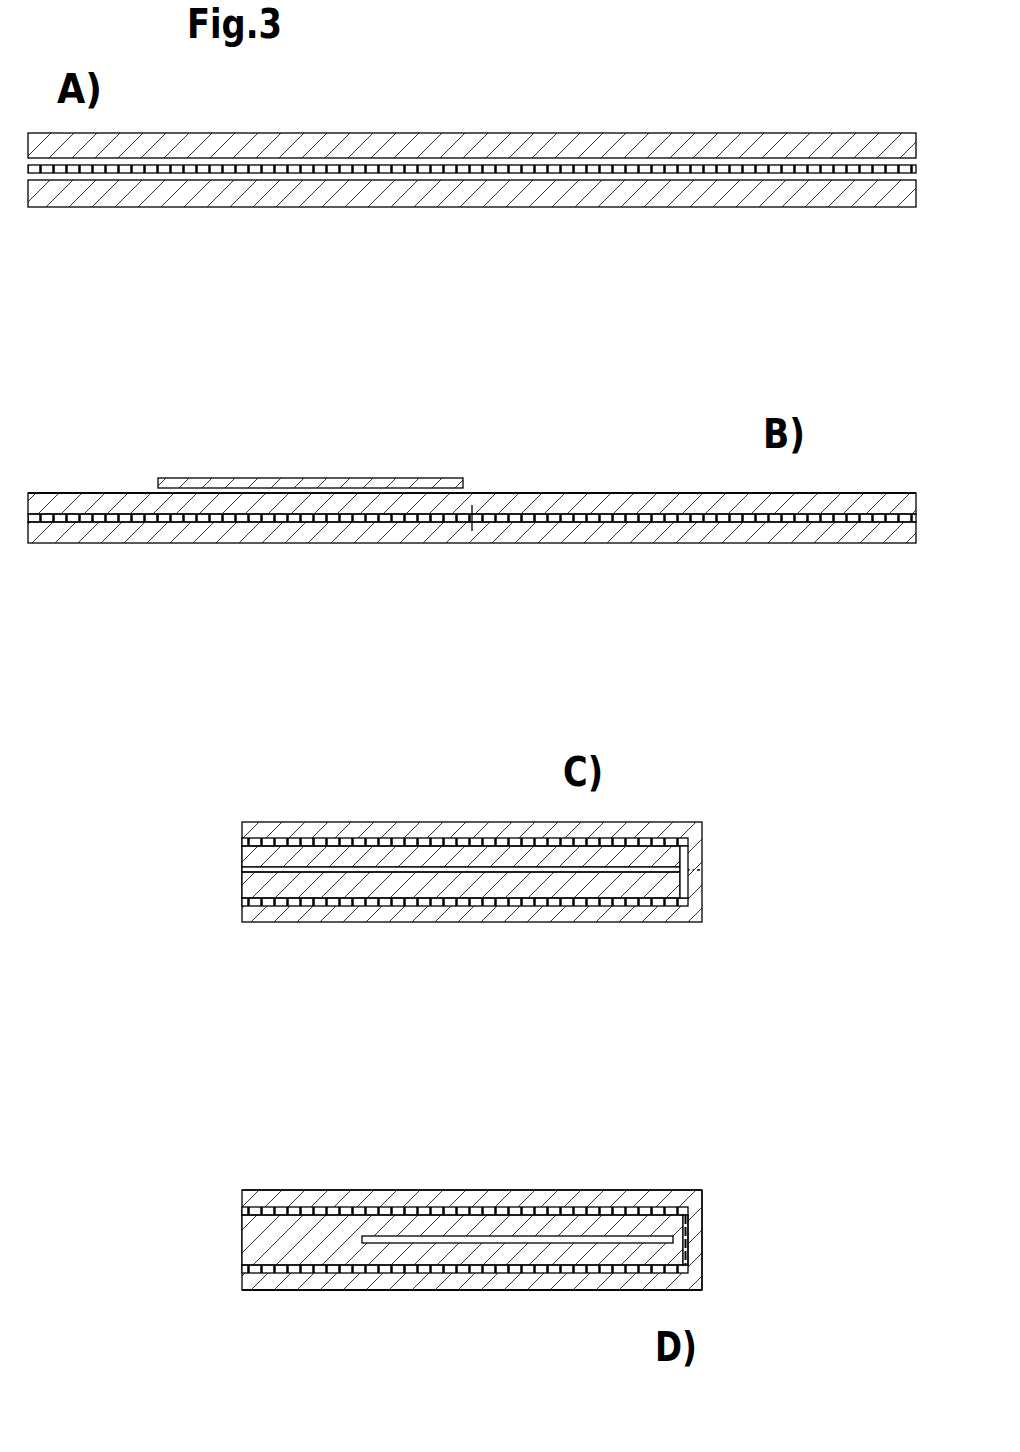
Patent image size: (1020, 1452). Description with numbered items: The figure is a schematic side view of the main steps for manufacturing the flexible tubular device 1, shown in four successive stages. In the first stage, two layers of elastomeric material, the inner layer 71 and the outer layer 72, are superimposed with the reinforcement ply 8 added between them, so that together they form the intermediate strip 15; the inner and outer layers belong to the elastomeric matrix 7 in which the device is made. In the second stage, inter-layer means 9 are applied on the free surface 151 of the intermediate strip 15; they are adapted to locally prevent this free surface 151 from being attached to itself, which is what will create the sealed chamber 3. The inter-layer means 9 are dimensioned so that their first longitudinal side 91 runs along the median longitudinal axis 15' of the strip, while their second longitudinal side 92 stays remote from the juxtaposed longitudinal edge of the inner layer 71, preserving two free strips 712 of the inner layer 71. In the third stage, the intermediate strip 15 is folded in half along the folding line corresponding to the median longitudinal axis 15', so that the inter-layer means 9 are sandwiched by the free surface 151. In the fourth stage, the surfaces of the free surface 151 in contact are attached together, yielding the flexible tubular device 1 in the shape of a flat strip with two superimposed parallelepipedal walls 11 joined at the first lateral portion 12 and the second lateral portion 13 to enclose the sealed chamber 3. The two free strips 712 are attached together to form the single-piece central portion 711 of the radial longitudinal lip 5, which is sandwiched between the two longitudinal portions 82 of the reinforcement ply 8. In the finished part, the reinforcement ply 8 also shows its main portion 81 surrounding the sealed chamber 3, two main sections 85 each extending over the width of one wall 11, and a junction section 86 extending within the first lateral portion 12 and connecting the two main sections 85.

The flexible tubular device 1 is at (446, 1244).
The sealed chamber 3 is at (505, 1238).
The radial longitudinal lip 5 is at (452, 1333).
The elastomeric matrix 7 is at (282, 828).
The reinforcement ply 8 is at (705, 170).
The inter-layer means 9 is at (425, 686).
The parallelepipedal walls 11 is at (665, 1183).
The first lateral portion 12 is at (712, 1222).
The second lateral portion 13 is at (272, 1298).
The intermediate strip 15 is at (473, 623).
The median longitudinal axis 15' is at (629, 701).
The inner elastomeric layer 71 is at (470, 140).
The outer elastomeric layer 72 is at (436, 200).
The main portion of the reinforcement ply 81 is at (445, 1208).
The longitudinal portions of the reinforcement ply 82 is at (272, 1210).
The main sections of the reinforcement ply 85 is at (465, 1239).
The junction section 86 is at (688, 1245).
The first longitudinal side 91 is at (155, 476).
The second longitudinal side 92 is at (308, 438).
The free surface 151 is at (683, 489).
The central portion 711 is at (250, 1240).
The free strips 712 is at (112, 488).